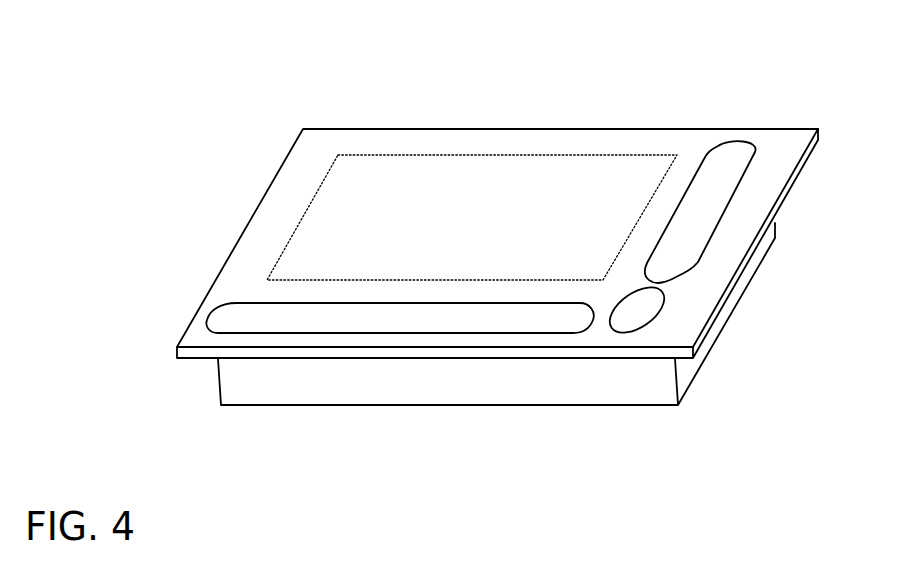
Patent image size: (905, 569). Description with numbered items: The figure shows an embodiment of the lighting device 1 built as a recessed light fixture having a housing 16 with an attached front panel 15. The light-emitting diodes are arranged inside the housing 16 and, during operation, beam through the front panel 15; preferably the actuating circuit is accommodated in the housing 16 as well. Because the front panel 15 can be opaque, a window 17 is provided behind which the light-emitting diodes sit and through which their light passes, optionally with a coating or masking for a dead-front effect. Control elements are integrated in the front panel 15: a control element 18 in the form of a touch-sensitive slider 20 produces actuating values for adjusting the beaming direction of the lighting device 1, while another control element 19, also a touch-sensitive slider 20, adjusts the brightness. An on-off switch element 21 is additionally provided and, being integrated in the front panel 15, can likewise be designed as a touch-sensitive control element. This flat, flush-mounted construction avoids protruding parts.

The lighting device 1 is at (80, 56).
The front panel 15 is at (287, 153).
The housing 16 is at (578, 406).
The window 17 is at (430, 157).
The control element 18 is at (233, 302).
The another control element 19 is at (707, 155).
The touch-sensitive slider 20 is at (471, 196).
The on-off switch element 21 is at (663, 295).